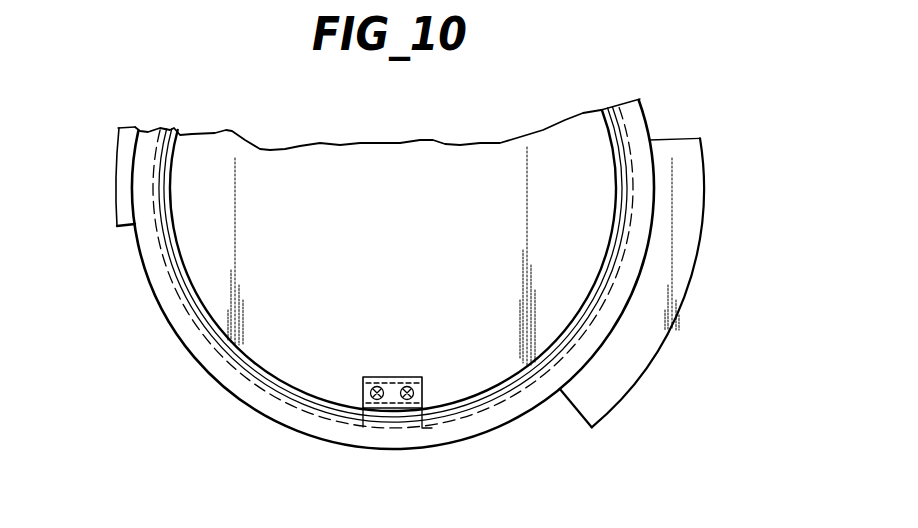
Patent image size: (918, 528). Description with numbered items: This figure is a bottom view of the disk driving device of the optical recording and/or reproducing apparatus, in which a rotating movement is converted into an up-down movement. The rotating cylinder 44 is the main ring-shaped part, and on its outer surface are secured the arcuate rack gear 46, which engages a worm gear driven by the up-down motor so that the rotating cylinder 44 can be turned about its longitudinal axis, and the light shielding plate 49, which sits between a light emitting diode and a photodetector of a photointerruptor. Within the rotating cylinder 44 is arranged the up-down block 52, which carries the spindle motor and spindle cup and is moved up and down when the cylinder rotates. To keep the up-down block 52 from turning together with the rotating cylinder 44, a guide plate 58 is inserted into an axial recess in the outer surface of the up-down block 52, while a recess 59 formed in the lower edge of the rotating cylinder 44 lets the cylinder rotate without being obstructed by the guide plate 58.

The rotating cylinder 44 is at (172, 332).
The arcuate rack gear 46 is at (117, 207).
The light shielding plate 49 is at (703, 247).
The up-down block 52 is at (458, 167).
The guide plate 58 is at (410, 377).
The recess 59 is at (281, 384).